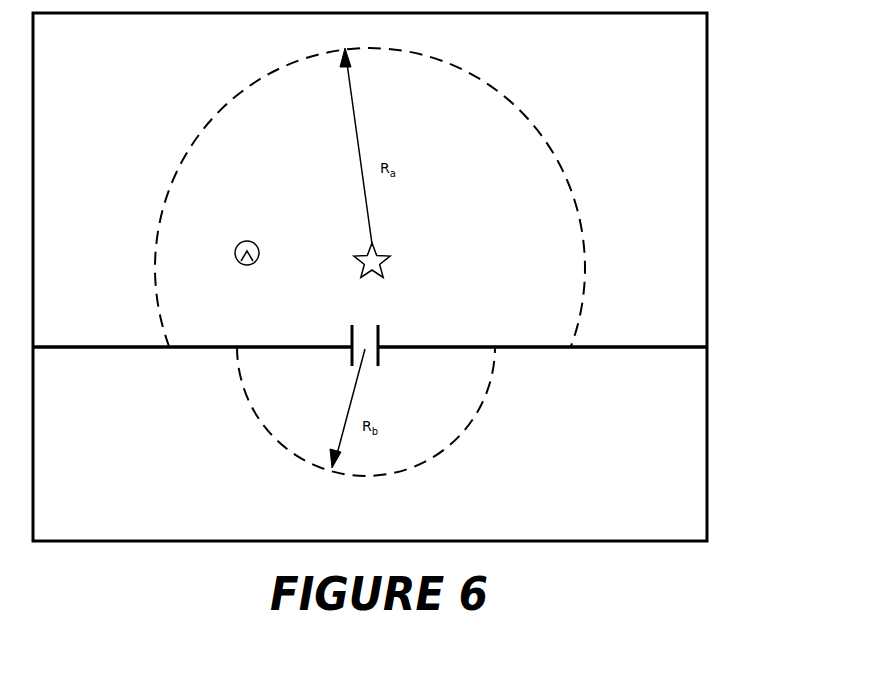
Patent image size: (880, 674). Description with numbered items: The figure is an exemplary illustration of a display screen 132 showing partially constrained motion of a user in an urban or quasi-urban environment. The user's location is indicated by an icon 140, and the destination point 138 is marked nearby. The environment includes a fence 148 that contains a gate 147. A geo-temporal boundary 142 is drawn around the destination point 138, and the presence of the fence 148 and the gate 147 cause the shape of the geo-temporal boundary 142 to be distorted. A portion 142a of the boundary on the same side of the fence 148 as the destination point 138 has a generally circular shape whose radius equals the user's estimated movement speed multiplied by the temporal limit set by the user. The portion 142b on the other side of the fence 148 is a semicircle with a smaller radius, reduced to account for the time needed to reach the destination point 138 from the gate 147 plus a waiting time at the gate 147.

The substrate / panel 132 is at (707, 75).
The destination point 138 is at (364, 252).
The icon 140 is at (236, 248).
The geo-temporal boundary 142 is at (328, 262).
The portion of the geo-temporal boundary 142a is at (168, 192).
The portion of the geo-temporal boundary 142b is at (472, 422).
The gate 147 is at (380, 353).
The fence 148 is at (103, 345).